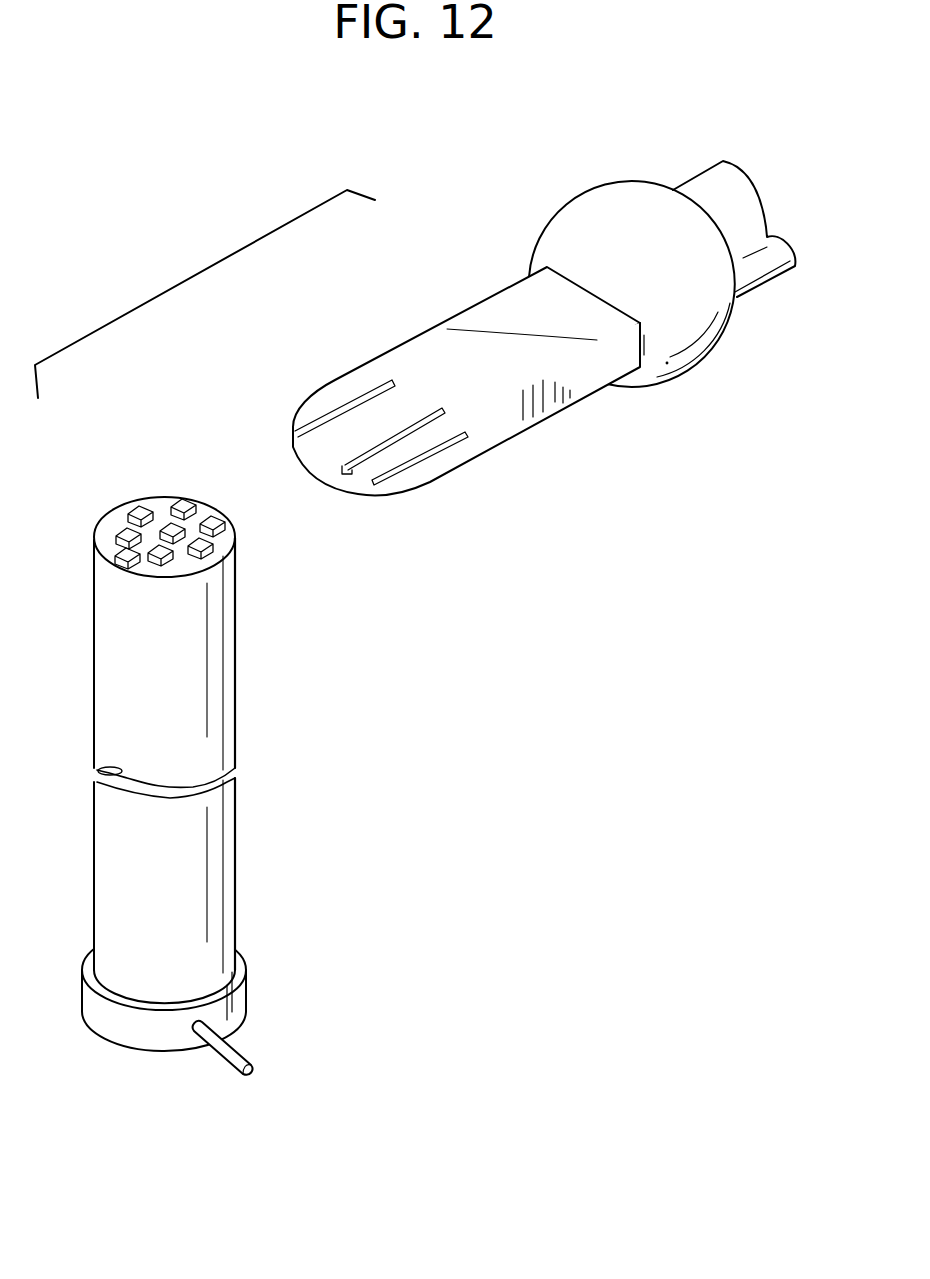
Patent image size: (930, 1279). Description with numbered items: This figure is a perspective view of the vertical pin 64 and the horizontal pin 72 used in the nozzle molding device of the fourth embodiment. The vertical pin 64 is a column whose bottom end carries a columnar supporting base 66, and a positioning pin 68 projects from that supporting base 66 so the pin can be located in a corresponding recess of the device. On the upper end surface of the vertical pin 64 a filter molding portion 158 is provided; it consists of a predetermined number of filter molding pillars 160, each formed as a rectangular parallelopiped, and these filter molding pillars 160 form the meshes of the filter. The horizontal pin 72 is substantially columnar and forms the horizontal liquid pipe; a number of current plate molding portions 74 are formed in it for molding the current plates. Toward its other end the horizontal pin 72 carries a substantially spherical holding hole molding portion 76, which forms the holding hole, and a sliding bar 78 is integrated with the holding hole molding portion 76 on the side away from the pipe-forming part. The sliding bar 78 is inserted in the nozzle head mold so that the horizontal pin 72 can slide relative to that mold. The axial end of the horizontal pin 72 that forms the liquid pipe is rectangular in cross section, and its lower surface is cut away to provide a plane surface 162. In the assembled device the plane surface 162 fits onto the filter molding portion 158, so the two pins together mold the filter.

The vertical pin 64 is at (242, 748).
The supporting base 66 is at (238, 1020).
The positioning pin 68 is at (246, 1057).
The horizontal pin 72 is at (463, 303).
The current plate molding portion 74 is at (347, 405).
The holding hole molding portion 76 is at (560, 210).
The sliding bar 78 is at (720, 160).
The filter molding portion 158 is at (123, 522).
The filter molding pillars 160 is at (187, 500).
The plane surface 162 is at (405, 489).